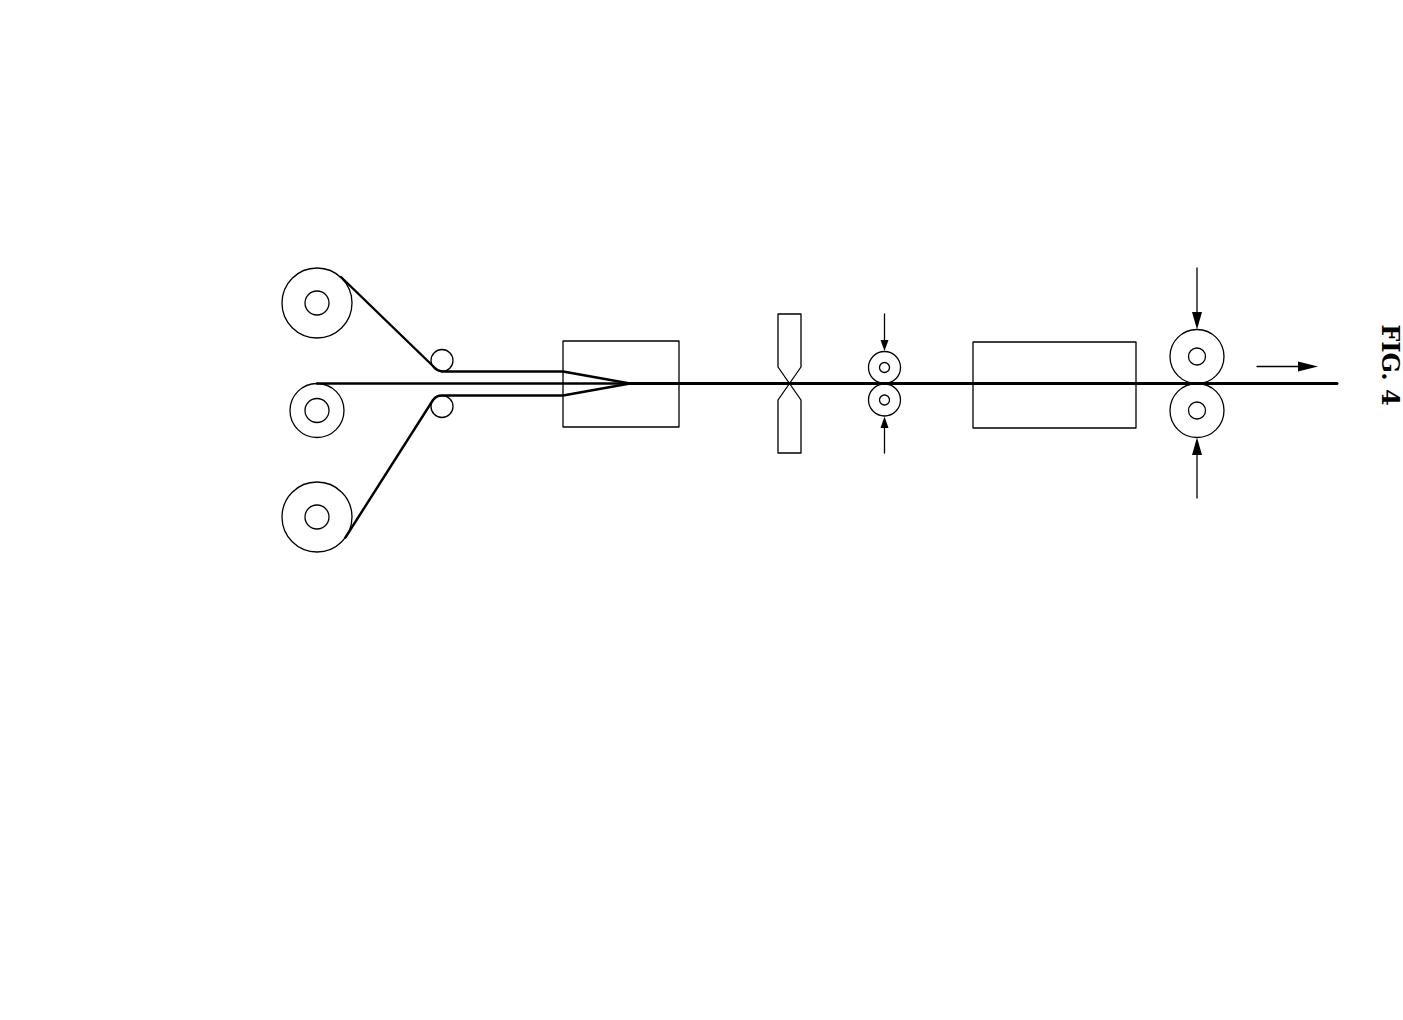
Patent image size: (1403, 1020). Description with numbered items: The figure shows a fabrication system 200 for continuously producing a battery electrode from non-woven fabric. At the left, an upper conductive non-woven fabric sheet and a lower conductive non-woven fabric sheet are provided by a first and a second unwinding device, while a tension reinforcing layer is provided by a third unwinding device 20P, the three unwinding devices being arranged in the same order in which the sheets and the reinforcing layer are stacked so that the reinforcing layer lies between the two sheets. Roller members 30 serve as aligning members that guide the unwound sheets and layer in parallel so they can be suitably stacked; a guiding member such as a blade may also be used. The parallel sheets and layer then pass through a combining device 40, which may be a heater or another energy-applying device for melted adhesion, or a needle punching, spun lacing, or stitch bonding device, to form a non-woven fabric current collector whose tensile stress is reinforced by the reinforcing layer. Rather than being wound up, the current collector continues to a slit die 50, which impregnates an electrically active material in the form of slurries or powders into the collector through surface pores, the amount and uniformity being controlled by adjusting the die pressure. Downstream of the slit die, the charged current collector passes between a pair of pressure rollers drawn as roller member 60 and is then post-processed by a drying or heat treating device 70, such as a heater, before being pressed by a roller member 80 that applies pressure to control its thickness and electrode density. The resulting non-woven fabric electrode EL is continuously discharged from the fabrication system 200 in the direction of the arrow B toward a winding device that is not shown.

The third unwinding device 20P is at (291, 404).
The roller members 30 is at (442, 351).
The combining device 40 is at (628, 340).
The slit die 50 is at (791, 313).
The first press rollers 60 is at (897, 355).
The heat treating device 70 is at (1002, 340).
The roller member 80 is at (1177, 348).
The fabrication system 200 is at (900, 226).
The arrow B is at (1278, 366).
The non-woven fabric electrode EL is at (1292, 384).